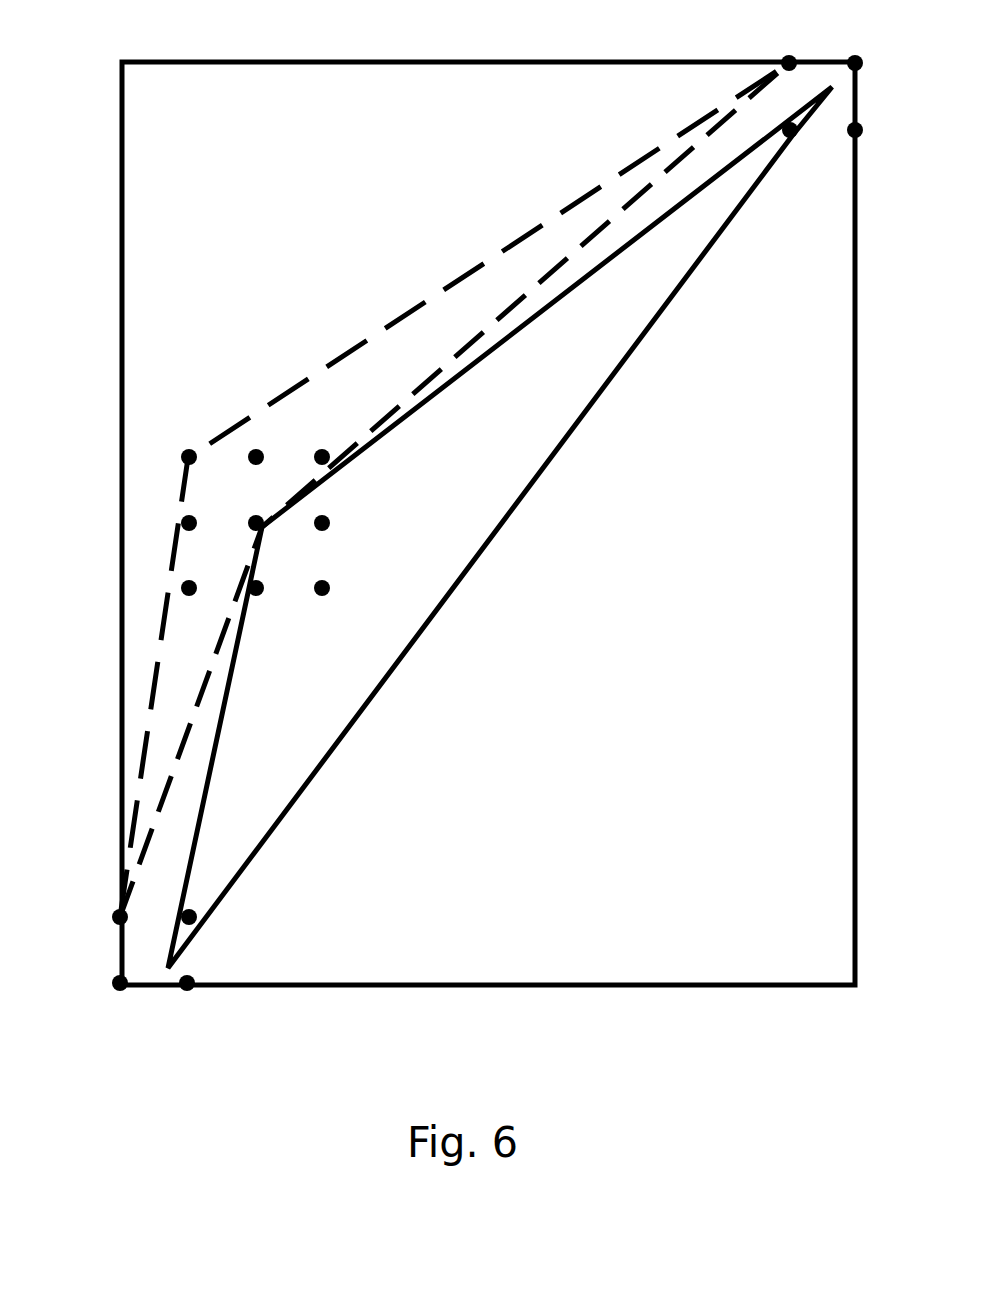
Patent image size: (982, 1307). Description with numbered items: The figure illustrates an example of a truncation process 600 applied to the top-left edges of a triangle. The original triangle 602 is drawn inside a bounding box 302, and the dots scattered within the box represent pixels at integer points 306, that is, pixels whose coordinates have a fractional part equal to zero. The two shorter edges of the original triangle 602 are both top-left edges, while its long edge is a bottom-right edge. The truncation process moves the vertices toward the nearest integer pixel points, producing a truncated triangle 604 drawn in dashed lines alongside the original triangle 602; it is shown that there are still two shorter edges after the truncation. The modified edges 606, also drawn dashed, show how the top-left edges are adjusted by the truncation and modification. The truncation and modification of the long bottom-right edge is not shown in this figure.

The truncation process 600 is at (152, 30).
The bounding box 302 is at (540, 988).
The original triangle 602 is at (359, 714).
The truncated triangle 604 is at (632, 202).
The modified edges 606 is at (340, 358).
The pixels at integer points 306 is at (119, 990).